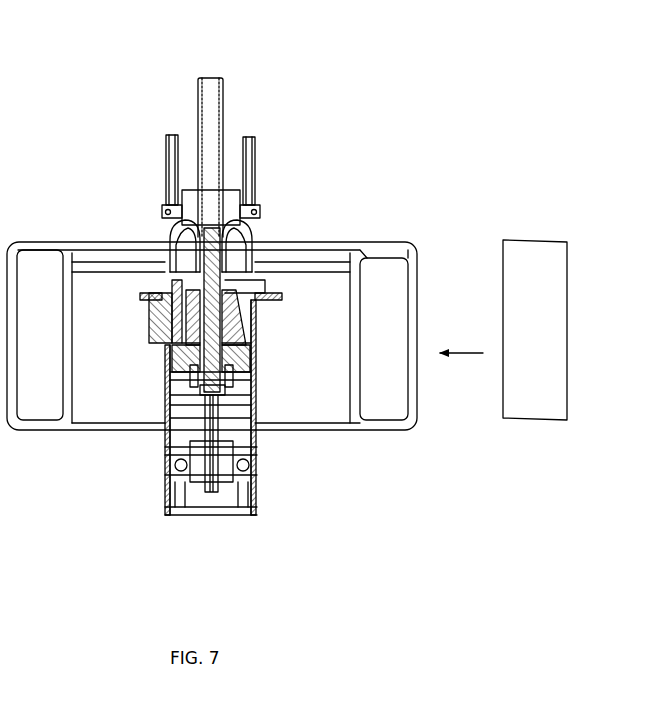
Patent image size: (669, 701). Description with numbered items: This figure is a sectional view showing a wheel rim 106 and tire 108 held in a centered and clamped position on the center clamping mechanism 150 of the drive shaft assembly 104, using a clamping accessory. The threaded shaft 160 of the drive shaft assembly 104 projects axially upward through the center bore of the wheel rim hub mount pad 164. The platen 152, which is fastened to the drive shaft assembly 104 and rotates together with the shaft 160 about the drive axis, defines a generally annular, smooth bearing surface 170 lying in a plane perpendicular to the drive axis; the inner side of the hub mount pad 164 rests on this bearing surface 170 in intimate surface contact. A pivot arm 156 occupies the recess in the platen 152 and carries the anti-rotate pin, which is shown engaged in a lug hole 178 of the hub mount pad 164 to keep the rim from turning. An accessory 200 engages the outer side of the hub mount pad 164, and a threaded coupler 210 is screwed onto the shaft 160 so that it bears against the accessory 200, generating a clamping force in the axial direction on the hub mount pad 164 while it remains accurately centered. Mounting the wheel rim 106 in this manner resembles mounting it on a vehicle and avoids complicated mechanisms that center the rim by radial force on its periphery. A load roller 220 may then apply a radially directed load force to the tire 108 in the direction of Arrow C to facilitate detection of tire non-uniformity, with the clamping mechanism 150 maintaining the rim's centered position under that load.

The drive shaft assembly 104 is at (124, 483).
The wheel rim 106 is at (352, 243).
The tire 108 is at (420, 297).
The center clamping mechanism 150 is at (245, 100).
The platen 152 is at (262, 303).
The pivot arm 156 is at (163, 286).
The threaded shaft 160 is at (222, 74).
The wheel rim hub mount pad 164 is at (264, 283).
The bearing surface 170 is at (262, 297).
The lug hole 178 is at (165, 279).
The accessory 200 is at (252, 240).
The threaded coupler 210 is at (236, 195).
The load roller 220 is at (521, 416).